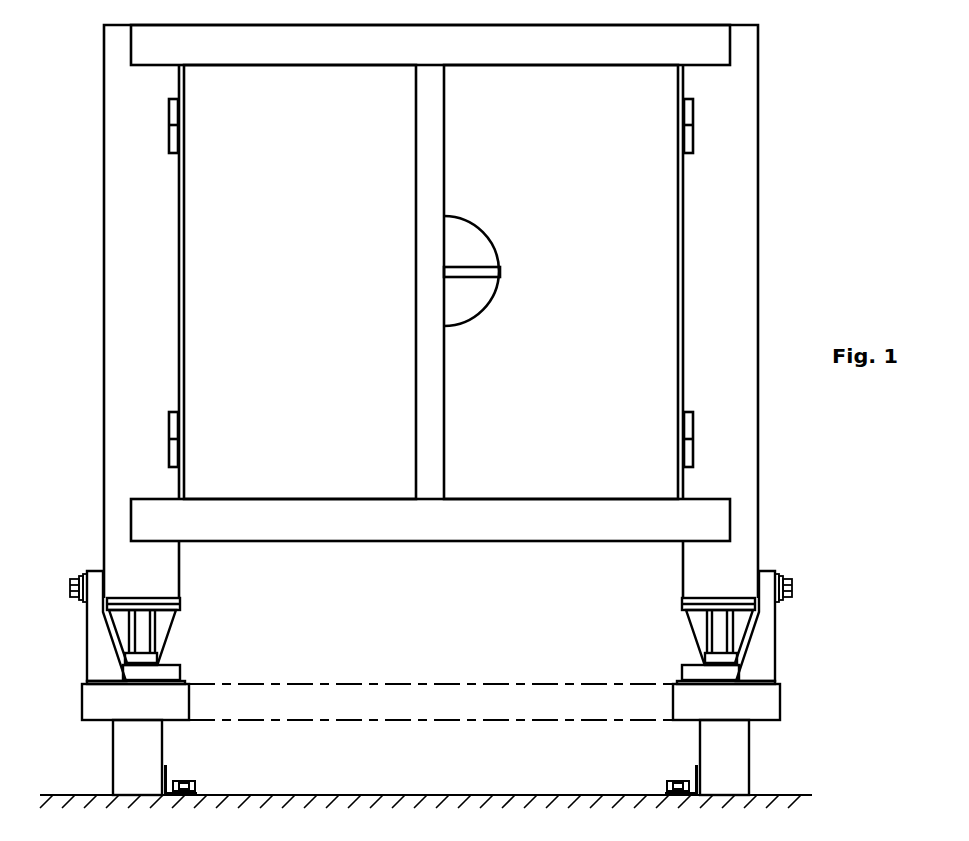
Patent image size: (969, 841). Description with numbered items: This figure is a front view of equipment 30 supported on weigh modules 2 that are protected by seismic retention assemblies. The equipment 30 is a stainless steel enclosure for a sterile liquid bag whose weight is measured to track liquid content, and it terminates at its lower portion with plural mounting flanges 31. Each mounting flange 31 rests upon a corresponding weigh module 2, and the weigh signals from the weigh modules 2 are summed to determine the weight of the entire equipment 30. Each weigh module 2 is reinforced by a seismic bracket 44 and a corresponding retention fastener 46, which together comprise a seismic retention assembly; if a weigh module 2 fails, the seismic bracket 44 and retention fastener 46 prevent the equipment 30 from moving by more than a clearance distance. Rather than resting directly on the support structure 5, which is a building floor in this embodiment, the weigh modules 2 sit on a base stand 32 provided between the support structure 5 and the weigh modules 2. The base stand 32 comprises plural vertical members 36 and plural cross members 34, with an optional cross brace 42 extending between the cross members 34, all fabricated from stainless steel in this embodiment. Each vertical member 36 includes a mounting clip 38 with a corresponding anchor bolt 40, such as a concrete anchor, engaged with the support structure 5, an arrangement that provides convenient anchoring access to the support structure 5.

The equipment 30 is at (104, 216).
The mounting flange 31 is at (169, 598).
The weigh module 2 is at (171, 636).
The seismic bracket 44 is at (87, 644).
The retention fastener 46 is at (71, 578).
The cross member 34 is at (82, 700).
The cross brace 42 is at (421, 684).
The vertical member 36 is at (113, 787).
The mounting clip 38 is at (167, 768).
The anchor bolt 40 is at (195, 783).
The base stand 32 is at (90, 740).
The support structure 5 is at (481, 795).